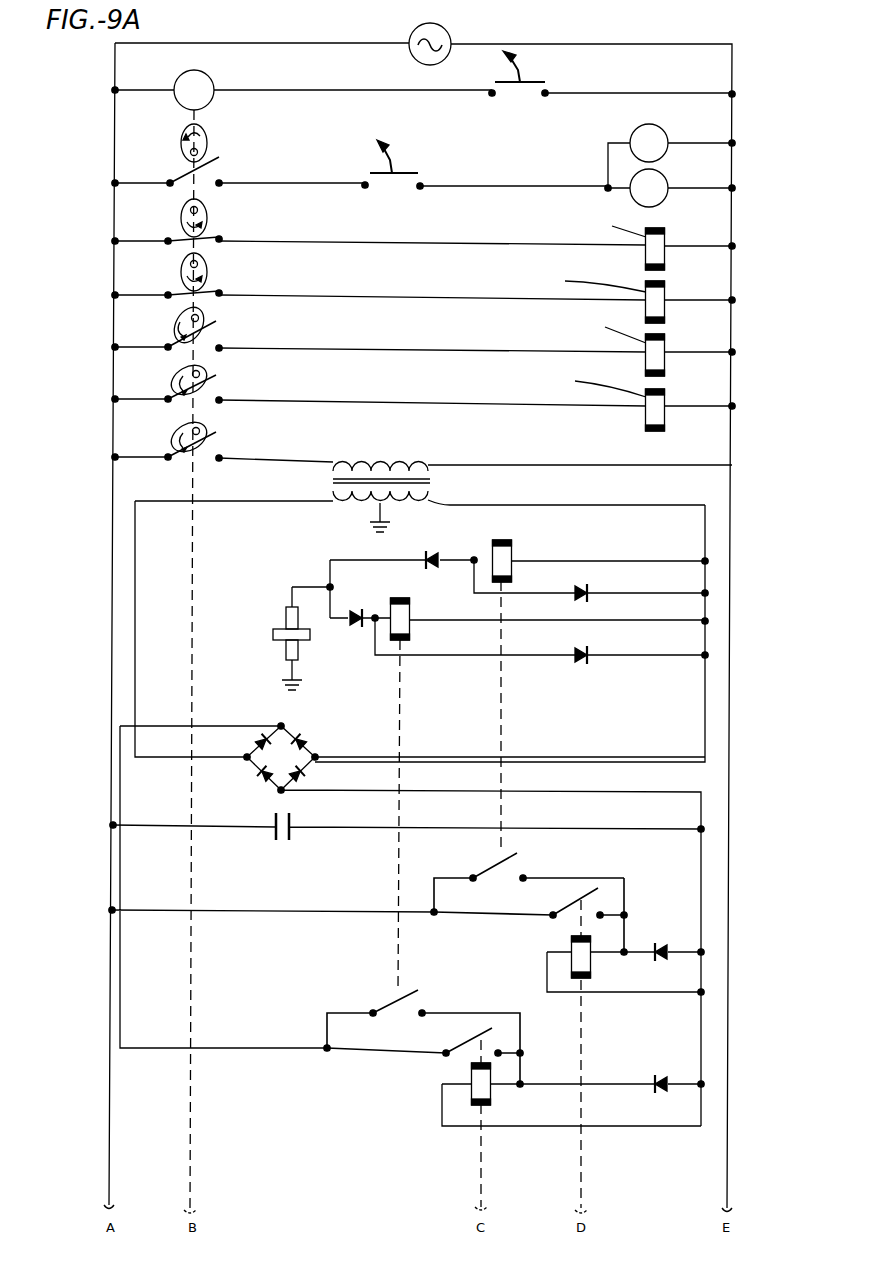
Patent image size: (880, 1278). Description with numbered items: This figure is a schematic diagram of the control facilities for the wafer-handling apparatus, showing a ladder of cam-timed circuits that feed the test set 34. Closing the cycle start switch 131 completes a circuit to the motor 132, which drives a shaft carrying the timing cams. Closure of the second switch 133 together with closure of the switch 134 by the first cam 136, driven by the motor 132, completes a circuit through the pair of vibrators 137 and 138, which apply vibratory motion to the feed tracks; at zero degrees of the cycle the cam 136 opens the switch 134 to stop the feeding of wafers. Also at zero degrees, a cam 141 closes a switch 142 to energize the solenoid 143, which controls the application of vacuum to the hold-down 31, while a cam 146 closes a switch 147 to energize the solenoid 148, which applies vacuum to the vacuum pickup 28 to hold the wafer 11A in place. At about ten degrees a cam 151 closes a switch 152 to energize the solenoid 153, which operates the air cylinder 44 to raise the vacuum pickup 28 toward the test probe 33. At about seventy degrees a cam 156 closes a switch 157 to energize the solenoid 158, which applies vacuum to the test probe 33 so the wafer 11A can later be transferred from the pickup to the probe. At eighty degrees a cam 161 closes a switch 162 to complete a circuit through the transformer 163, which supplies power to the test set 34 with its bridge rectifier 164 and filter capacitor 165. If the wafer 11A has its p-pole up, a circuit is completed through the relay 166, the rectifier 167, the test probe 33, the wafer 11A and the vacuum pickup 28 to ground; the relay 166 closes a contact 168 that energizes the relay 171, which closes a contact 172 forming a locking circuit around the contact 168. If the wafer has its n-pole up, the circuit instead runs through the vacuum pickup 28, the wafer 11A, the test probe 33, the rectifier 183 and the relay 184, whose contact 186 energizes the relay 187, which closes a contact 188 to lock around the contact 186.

The cycle start switch 131 is at (528, 85).
The motor 132 is at (215, 80).
The second switch 133 is at (408, 172).
The switch 134 is at (222, 165).
The first cam 136 is at (180, 140).
The vibrator 137 is at (630, 133).
The vibrator 138 is at (668, 180).
The cam 141 is at (182, 212).
The switch 142 is at (218, 235).
The solenoid 143 is at (666, 228).
The cam 146 is at (182, 268).
The switch 147 is at (217, 290).
The solenoid 148 is at (666, 285).
The cam 151 is at (176, 322).
The switch 152 is at (208, 332).
The solenoid 153 is at (666, 340).
The cam 156 is at (176, 378).
The switch 157 is at (215, 378).
The solenoid 158 is at (666, 396).
The cam 161 is at (176, 436).
The switch 162 is at (220, 434).
The transformer 163 is at (432, 495).
The bridge rectifier 164 is at (315, 742).
The filter capacitor 165 is at (274, 832).
The relay 166 is at (512, 545).
The rectifier 167 is at (436, 557).
The contact 168 is at (497, 862).
The relay 171 is at (592, 962).
The contact 172 is at (572, 905).
The rectifier 183 is at (360, 612).
The relay 184 is at (412, 607).
The contact 186 is at (392, 1005).
The relay 187 is at (492, 1092).
The contact 188 is at (470, 1042).
The test set 34 is at (740, 470).
The test probe 33 is at (284, 612).
The wafer 11A is at (272, 634).
The vacuum pickup 28 is at (285, 650).
The hold-down 31 is at (586, 234).
The air cylinder 44 is at (587, 343).